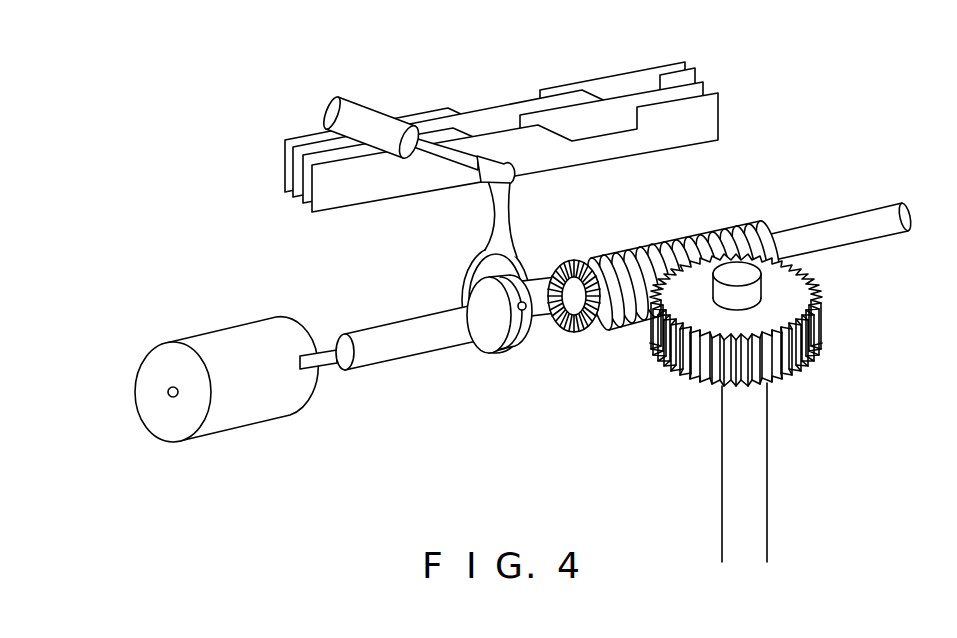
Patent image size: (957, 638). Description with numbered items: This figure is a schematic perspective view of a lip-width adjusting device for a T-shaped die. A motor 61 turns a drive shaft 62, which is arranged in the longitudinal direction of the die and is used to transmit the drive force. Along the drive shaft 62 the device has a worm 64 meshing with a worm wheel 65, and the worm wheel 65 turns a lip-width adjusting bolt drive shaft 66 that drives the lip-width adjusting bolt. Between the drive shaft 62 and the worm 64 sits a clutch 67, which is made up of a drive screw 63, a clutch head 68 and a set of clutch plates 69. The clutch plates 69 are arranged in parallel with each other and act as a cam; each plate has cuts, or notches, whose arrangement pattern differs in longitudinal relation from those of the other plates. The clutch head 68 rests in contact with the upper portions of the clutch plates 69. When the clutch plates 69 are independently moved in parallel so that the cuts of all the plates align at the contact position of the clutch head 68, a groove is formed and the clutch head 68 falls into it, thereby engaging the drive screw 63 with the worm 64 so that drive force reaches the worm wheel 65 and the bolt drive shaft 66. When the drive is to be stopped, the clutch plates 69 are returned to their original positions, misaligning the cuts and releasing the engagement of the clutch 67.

The motor 61 is at (263, 414).
The drive shaft 62 is at (400, 348).
The drive screw 63 is at (527, 343).
The worm 64 is at (687, 233).
The worm wheel 65 is at (815, 347).
The lip-width adjusting bolt drive shaft 66 is at (768, 498).
The clutch 67 is at (503, 230).
The clutch head 68 is at (365, 118).
The clutch plates 69 is at (685, 62).